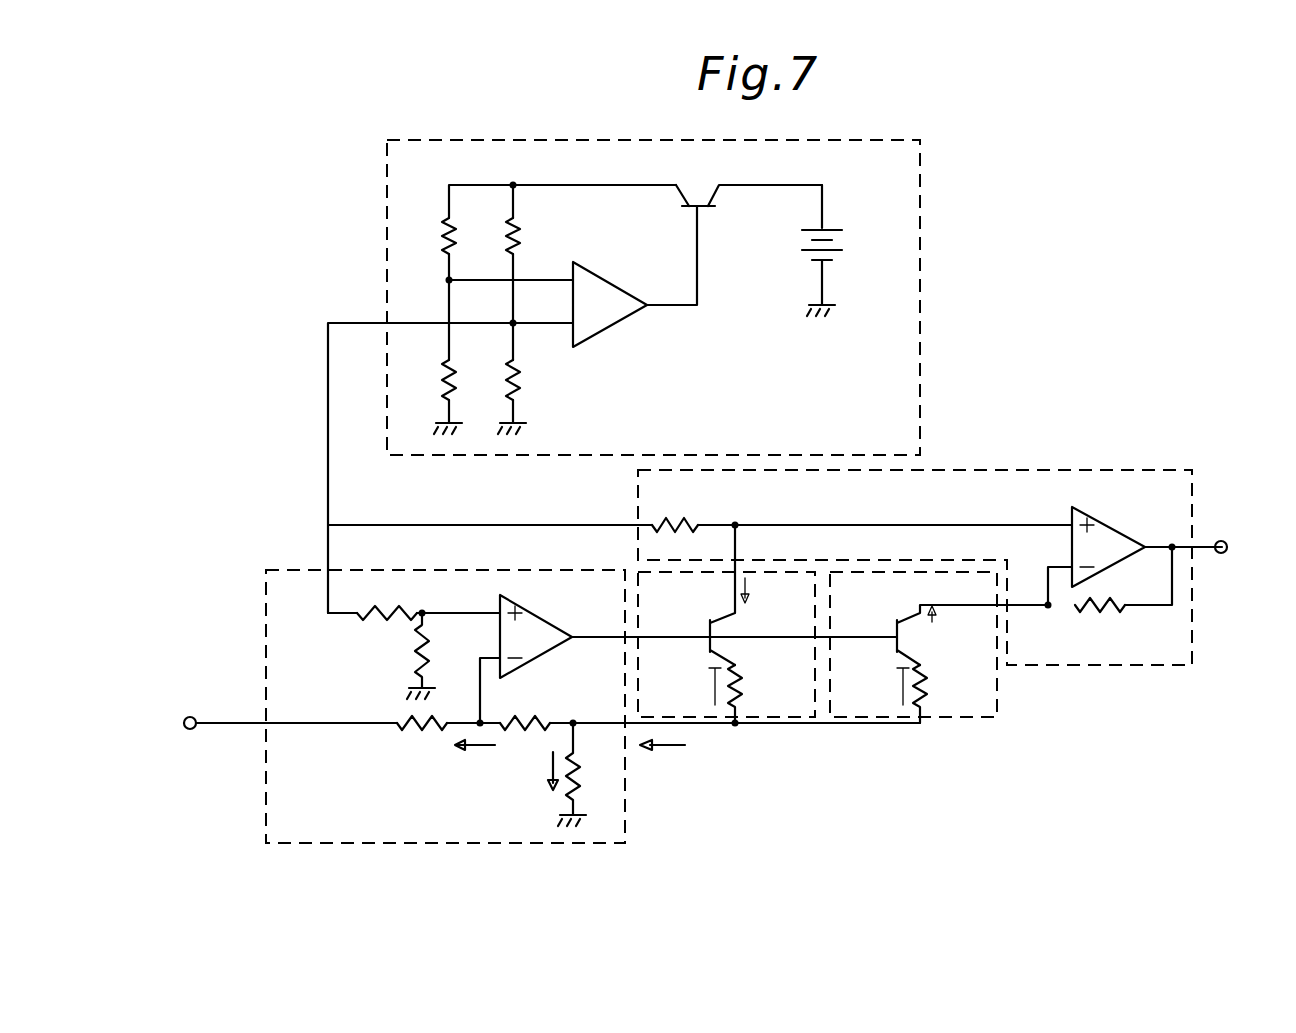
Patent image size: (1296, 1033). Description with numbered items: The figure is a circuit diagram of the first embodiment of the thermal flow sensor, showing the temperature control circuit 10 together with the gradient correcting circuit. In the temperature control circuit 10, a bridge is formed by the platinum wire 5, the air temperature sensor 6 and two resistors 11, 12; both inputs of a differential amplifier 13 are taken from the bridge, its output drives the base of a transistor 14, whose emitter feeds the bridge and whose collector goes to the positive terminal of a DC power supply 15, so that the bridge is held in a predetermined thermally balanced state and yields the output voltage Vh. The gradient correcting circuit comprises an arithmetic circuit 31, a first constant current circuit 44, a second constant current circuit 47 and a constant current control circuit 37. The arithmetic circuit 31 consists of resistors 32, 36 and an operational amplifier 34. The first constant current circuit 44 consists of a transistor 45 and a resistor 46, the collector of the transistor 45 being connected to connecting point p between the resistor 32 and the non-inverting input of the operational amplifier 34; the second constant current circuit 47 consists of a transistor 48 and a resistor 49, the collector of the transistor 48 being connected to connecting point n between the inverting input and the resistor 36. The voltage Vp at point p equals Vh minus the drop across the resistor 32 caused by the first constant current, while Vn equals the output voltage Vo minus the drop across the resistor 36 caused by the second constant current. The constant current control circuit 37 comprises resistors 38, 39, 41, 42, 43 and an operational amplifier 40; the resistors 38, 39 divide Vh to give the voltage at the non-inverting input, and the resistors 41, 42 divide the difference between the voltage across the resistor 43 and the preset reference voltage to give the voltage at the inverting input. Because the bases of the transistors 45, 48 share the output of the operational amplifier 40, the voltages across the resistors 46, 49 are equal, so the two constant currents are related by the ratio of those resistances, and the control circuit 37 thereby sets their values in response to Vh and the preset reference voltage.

The temperature control circuit 10 is at (612, 133).
The platinum wire 5 is at (528, 238).
The air temperature sensor 6 is at (454, 238).
The resistor 11 is at (456, 374).
The resistor 12 is at (522, 374).
The differential amplifier 13 is at (604, 316).
The transistor 14 is at (682, 206).
The DC power supply 15 is at (843, 242).
The arithmetic circuit 31 is at (960, 471).
The resistor 32 is at (681, 532).
The operational amplifier 34 is at (1102, 530).
The resistor 36 is at (1110, 596).
The constant current control circuit 37 is at (628, 825).
The resistor 38 is at (376, 604).
The resistor 39 is at (408, 665).
The operational amplifier 40 is at (545, 621).
The resistor 41 is at (396, 720).
The resistor 42 is at (558, 716).
The resistor 43 is at (586, 768).
The first constant current circuit 44 is at (800, 718).
The transistor 45 is at (708, 622).
The resistor 46 is at (746, 684).
The second constant current circuit 47 is at (962, 718).
The transistor 48 is at (894, 622).
The resistor 49 is at (928, 672).